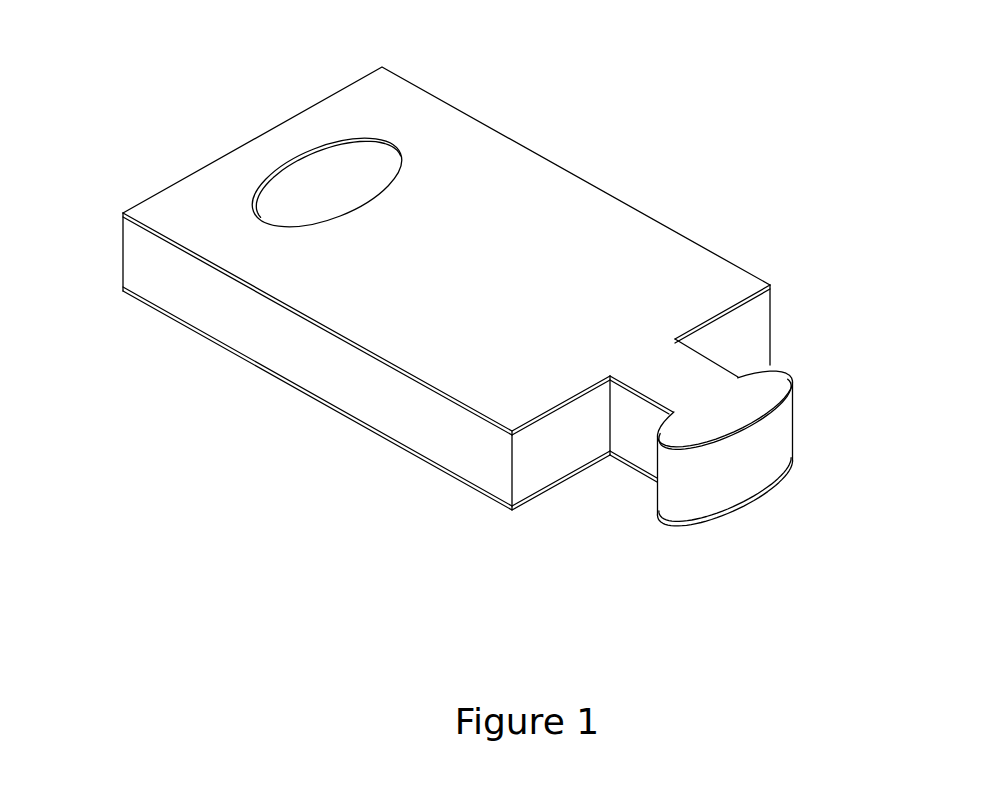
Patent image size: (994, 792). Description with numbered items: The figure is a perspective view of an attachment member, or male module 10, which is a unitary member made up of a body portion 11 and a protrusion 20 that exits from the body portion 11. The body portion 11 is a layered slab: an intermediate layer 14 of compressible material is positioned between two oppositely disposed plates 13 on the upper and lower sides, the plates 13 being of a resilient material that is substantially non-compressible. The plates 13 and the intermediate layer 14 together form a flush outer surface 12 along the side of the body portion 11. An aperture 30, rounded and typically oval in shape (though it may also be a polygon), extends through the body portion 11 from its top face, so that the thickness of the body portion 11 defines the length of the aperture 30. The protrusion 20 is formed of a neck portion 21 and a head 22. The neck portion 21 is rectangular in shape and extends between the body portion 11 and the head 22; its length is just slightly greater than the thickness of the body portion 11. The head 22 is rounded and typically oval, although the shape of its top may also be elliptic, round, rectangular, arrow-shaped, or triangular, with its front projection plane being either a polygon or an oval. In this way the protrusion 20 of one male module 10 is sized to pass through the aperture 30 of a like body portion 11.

The attachment member (male module) 10 is at (423, 335).
The body portion 11 is at (412, 259).
The flush outer surface 12 is at (260, 325).
The plates 13 is at (145, 223).
The intermediate layer 14 is at (135, 260).
The protrusion 20 is at (661, 501).
The neck portion 21 is at (673, 378).
The head 22 is at (725, 413).
The aperture 30 is at (330, 185).